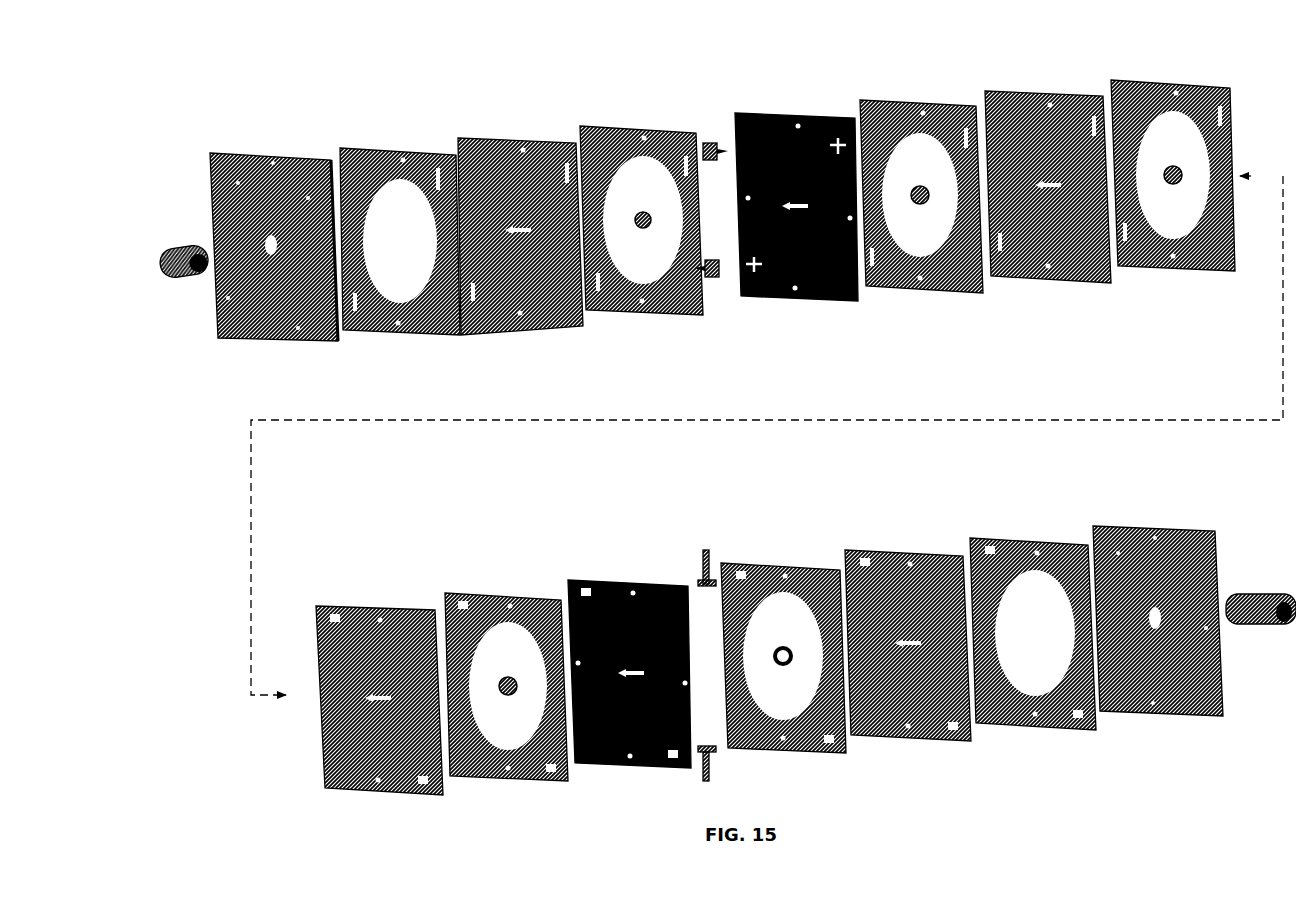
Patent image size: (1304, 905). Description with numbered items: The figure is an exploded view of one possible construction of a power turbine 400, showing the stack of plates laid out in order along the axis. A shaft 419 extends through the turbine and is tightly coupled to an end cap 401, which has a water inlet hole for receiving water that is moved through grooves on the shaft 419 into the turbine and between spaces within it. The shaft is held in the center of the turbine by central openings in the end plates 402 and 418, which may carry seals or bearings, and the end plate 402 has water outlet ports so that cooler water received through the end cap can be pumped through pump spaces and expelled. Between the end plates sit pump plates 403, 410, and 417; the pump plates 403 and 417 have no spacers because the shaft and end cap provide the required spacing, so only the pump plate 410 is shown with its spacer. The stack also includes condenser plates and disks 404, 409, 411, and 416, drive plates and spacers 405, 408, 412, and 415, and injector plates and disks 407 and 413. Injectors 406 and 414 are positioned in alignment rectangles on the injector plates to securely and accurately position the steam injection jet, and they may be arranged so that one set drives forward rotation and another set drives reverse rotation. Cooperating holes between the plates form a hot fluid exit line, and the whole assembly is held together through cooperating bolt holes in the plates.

The power turbine 400 is at (246, 96).
The end cap 401 is at (170, 237).
The end plate 402 is at (260, 147).
The pump plate 403 is at (390, 140).
The condenser plate and disk 404 is at (508, 130).
The drive plate and spacer 405 is at (628, 120).
The injector 406 is at (713, 284).
The injector plate and disk 407 is at (783, 107).
The drive plate and spacer 408 is at (900, 95).
The condenser plate and disk 409 is at (1040, 85).
The pump plate 410 is at (1167, 75).
The condenser plate and disk 411 is at (368, 600).
The drive plate and spacer 412 is at (498, 588).
The injector plate and disk 413 is at (615, 574).
The injector 414 is at (688, 526).
The drive plate and spacer 415 is at (790, 556).
The condenser plate and disk 416 is at (905, 543).
The pump plate 417 is at (1010, 532).
The end plate 418 is at (1105, 518).
The shaft 419 is at (1272, 585).